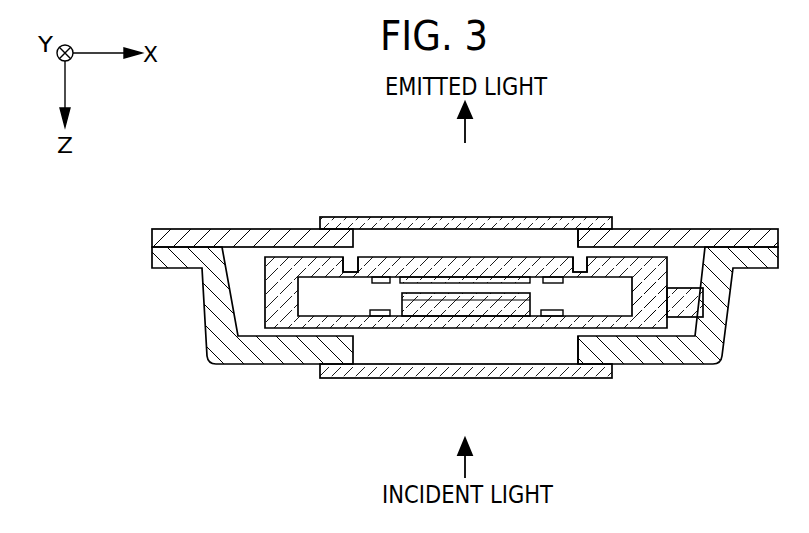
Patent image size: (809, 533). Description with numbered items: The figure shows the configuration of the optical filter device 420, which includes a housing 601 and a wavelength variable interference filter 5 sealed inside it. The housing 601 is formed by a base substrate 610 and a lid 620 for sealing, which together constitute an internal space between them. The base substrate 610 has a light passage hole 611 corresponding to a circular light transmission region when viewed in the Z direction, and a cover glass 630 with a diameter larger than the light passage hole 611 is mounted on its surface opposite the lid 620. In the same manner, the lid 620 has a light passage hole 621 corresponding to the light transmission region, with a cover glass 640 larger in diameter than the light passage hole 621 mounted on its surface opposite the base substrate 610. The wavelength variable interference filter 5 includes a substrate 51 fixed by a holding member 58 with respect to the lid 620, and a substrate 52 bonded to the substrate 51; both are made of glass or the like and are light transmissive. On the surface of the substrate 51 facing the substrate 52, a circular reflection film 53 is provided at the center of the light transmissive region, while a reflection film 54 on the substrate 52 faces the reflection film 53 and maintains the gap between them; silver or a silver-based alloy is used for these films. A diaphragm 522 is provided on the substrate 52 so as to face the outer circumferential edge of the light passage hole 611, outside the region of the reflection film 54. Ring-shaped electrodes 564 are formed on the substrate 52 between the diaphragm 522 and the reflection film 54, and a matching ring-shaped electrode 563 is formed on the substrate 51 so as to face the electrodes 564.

The wavelength variable interference filter 5 is at (247, 273).
The substrate 51 is at (652, 300).
The substrate 52 is at (655, 257).
The diaphragm 522 is at (350, 272).
The reflection film 53 is at (451, 296).
The reflection film 54 is at (430, 287).
The electrode 563 is at (370, 307).
The electrode 564 is at (380, 287).
The holding member 58 is at (675, 312).
The housing 601 is at (80, 222).
The base substrate 610 is at (152, 232).
The light passage hole 611 is at (580, 232).
The lid 620 is at (152, 257).
The light passage hole 621 is at (563, 353).
The cover glass 630 is at (501, 222).
The cover glass 640 is at (510, 372).
The optical filter device 420 is at (670, 126).